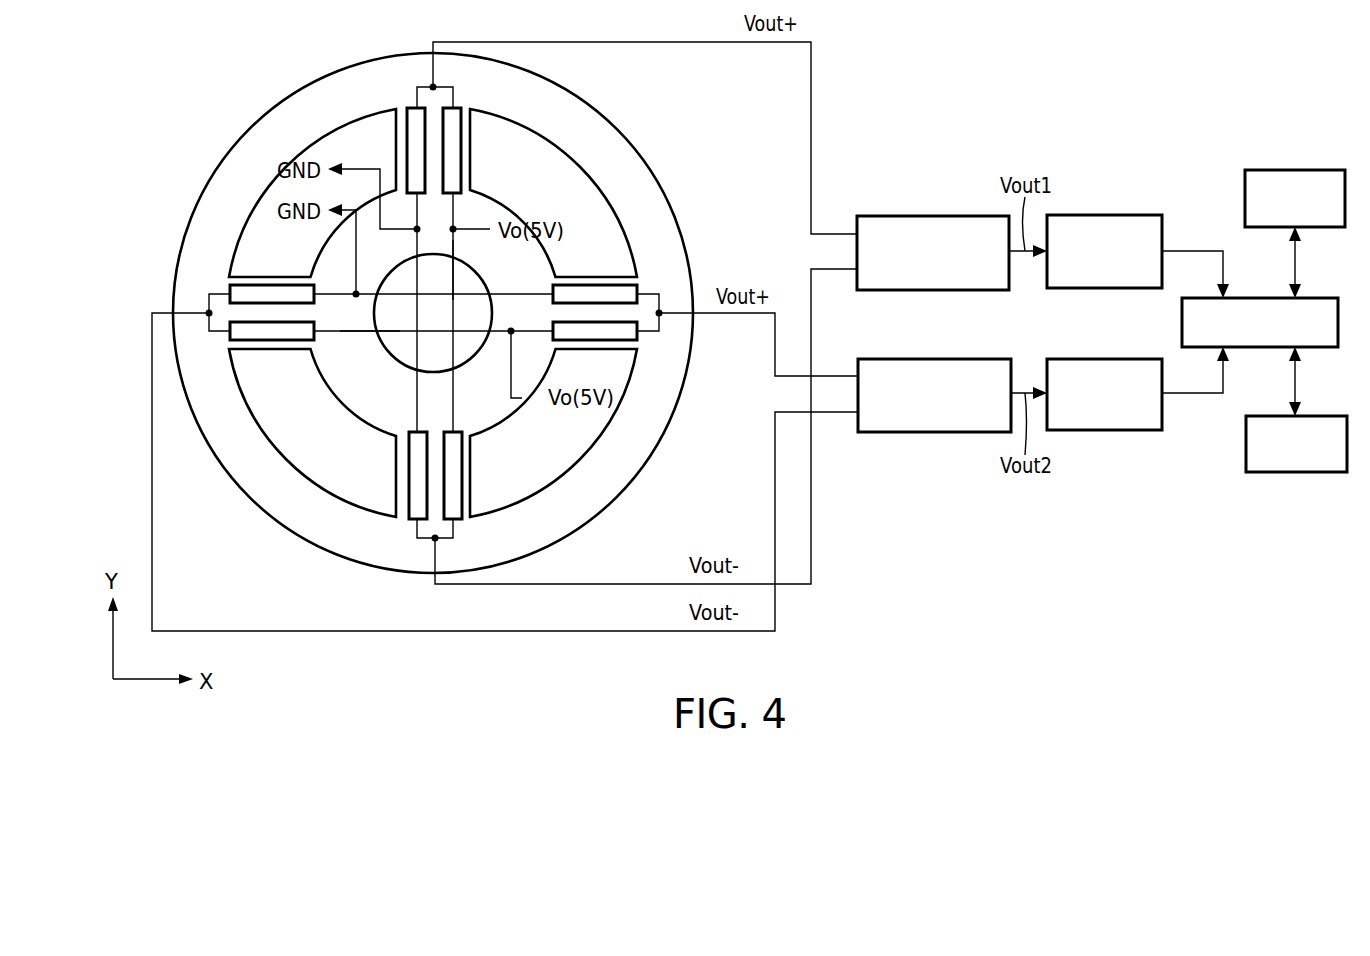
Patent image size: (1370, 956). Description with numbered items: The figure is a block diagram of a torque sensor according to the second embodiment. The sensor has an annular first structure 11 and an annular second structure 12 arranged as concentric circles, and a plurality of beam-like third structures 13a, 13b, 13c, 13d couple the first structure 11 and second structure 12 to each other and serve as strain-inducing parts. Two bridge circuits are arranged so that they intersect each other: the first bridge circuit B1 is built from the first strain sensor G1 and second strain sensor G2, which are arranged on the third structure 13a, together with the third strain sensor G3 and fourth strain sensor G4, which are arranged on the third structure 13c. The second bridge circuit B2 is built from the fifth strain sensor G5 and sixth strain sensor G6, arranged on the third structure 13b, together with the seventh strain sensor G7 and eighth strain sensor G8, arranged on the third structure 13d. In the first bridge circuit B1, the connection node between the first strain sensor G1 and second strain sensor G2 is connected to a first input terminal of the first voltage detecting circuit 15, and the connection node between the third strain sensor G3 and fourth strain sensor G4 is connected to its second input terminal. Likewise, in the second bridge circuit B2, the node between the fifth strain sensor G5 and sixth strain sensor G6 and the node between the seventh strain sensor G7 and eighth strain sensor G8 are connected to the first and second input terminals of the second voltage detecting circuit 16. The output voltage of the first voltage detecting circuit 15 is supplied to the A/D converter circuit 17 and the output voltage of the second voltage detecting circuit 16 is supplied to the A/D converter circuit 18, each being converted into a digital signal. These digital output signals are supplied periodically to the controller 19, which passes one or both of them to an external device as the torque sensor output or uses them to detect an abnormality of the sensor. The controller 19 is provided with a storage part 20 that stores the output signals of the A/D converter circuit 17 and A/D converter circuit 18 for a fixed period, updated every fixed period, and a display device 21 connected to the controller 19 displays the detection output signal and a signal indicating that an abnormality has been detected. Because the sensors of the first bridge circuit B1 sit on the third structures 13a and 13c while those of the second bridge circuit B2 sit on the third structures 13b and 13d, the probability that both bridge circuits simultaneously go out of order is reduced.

The first structure 11 is at (611, 118).
The second structure 12 is at (488, 216).
The third structure 13a is at (472, 149).
The third structure 13b is at (602, 272).
The third structure 13c is at (472, 454).
The third structure 13d is at (274, 356).
The first voltage detecting circuit 15 is at (906, 216).
The second voltage detecting circuit 16 is at (906, 432).
The A/D converter circuit 17 is at (1123, 215).
The A/D converter circuit 18 is at (1123, 430).
The controller 19 is at (1331, 298).
The storage part 20 is at (1295, 170).
The display device 21 is at (1330, 416).
The first strain sensor G1 is at (413, 117).
The second strain sensor G2 is at (455, 118).
The third strain sensor G3 is at (415, 505).
The fourth strain sensor G4 is at (456, 505).
The fifth strain sensor G5 is at (615, 290).
The sixth strain sensor G6 is at (617, 336).
The seventh strain sensor G7 is at (236, 290).
The eighth strain sensor G8 is at (236, 336).
The first bridge circuit B1 is at (457, 286).
The second bridge circuit B2 is at (366, 336).